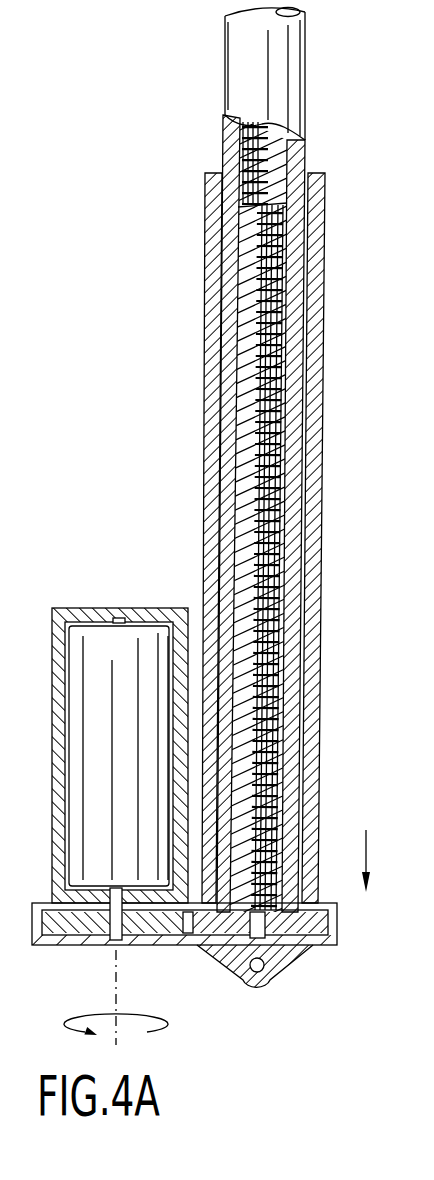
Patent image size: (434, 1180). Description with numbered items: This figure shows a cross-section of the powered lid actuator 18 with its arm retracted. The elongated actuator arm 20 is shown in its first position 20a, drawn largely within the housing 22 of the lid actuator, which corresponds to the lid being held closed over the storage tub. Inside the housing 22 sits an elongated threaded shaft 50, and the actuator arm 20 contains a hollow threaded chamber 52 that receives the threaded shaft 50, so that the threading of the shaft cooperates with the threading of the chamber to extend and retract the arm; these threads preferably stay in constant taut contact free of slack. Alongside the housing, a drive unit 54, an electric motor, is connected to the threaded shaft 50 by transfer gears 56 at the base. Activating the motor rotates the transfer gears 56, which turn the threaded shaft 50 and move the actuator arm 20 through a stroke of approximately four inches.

The lid actuator 18 is at (132, 393).
The actuator arm 20 is at (305, 72).
The first position 20a is at (212, 61).
The housing 22 is at (323, 262).
The elongated threaded shaft 50 is at (260, 463).
The hollow threaded chamber 52 is at (240, 150).
The drive unit 54 is at (103, 652).
The transfer gears 56 is at (165, 923).